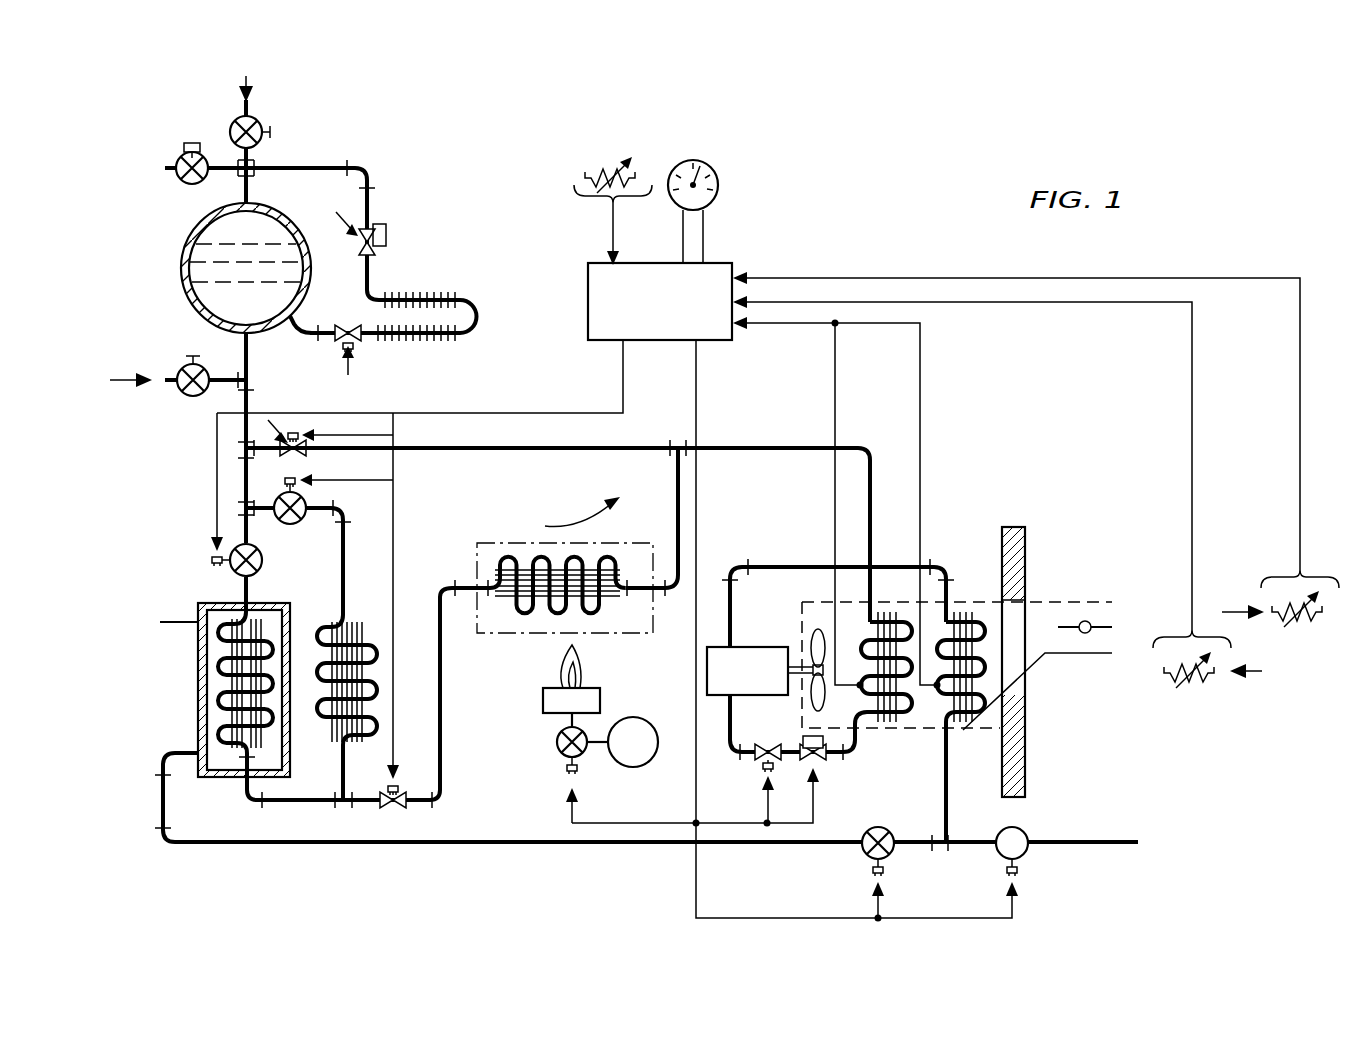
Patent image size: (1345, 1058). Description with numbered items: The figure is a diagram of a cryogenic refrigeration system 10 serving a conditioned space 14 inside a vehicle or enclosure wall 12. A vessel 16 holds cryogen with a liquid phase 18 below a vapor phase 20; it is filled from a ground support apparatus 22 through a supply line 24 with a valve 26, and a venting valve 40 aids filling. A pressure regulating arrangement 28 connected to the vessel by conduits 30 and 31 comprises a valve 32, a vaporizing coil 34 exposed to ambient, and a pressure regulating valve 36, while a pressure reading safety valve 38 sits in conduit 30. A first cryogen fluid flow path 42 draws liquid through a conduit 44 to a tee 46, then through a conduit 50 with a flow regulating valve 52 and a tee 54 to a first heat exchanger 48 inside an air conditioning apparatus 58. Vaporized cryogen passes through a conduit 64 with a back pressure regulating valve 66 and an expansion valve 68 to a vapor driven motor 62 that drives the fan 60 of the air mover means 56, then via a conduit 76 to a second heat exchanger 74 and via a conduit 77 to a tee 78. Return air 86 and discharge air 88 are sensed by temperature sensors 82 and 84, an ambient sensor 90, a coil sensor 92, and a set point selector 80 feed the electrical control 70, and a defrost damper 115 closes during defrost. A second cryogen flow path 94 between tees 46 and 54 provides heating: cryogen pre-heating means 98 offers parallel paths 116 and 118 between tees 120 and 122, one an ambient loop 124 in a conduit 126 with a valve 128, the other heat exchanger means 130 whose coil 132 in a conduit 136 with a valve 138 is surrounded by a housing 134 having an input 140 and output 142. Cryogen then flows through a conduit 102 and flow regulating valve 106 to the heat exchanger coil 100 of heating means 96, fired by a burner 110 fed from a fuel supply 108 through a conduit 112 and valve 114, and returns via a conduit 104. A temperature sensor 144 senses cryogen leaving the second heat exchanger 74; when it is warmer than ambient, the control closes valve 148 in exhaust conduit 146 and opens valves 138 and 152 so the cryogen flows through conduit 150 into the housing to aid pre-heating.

The refrigeration system 10 is at (472, 211).
The vehicle 12 is at (1025, 532).
The conditioned space 14 is at (1042, 502).
The vessel 16 is at (181, 280).
The liquid phase 18 is at (230, 242).
The vapor phase 20 is at (255, 218).
The ground support apparatus 22 is at (140, 373).
The supply line 24 is at (185, 368).
The valve 26 is at (240, 380).
The pressure regulating arrangement 28 is at (385, 298).
The conduit 30 is at (300, 333).
The conduit 31 is at (370, 195).
The valve 32 is at (354, 344).
The vaporizing coil 34 is at (472, 306).
The pressure regulating valve 36 is at (365, 252).
The pressure reading safety valve 38 is at (192, 143).
The venting valve 40 is at (256, 120).
The first cryogen fluid flow path 42 is at (286, 428).
The conduit 44 is at (250, 402).
The tee 46 is at (240, 446).
The first heat exchanger 48 is at (876, 614).
The conduit 50 is at (474, 454).
The flow regulating valve 52 is at (290, 460).
The tee 54 is at (686, 442).
The air mover means 56 is at (732, 720).
The air conditioning apparatus 58 is at (806, 602).
The fan 60 is at (812, 644).
The vapor driven motor 62 is at (722, 696).
The conduit 64 is at (858, 738).
The back pressure regulating valve 66 is at (822, 762).
The expansion valve 68 is at (760, 762).
The electrical control 70 is at (588, 302).
The second heat exchanger 74 is at (962, 616).
The conduit 76 is at (768, 567).
The conduit 77 is at (948, 790).
The tee 78 is at (940, 852).
The set point temperature selector 80 is at (718, 183).
The return air temperature sensor 82 is at (1195, 686).
The discharge air temperature sensor 84 is at (1308, 628).
The return air 86 is at (1265, 672).
The discharge air 88 is at (1240, 610).
The ambient air temperature sensor 90 is at (605, 172).
The temperature sensor 92 is at (860, 689).
The second cryogen flow path 94 is at (565, 560).
The cryogen heating means 96 is at (594, 734).
The cryogen pre-heating means 98 is at (343, 686).
The heat exchanger coil 100 is at (610, 556).
The conduit 102 is at (444, 798).
The conduit 104 is at (676, 515).
The flow regulating valve 106 is at (394, 810).
The fuel supply 108 is at (650, 725).
The burner 110 is at (545, 694).
The conduit 112 is at (598, 748).
The valve 114 is at (556, 748).
The defrost damper 115 is at (1083, 621).
The first parallel flow path 116 is at (343, 669).
The second parallel flow path 118 is at (235, 677).
The tee 120 is at (240, 508).
The tee 122 is at (345, 808).
The ambient loop 124 is at (348, 746).
The conduit 126 is at (348, 566).
The valve 128 is at (308, 504).
The heat exchanger means 130 is at (235, 677).
The heat exchanger coil 132 is at (272, 648).
The housing 134 is at (216, 778).
The conduit 136 is at (258, 532).
The valve 138 is at (263, 568).
The input 140 is at (188, 760).
The output 142 is at (180, 620).
The temperature sensor 144 is at (935, 690).
The exhaust conduit 146 is at (1090, 842).
The valve 148 is at (1025, 852).
The conduit 150 is at (508, 846).
The valve 152 is at (862, 850).